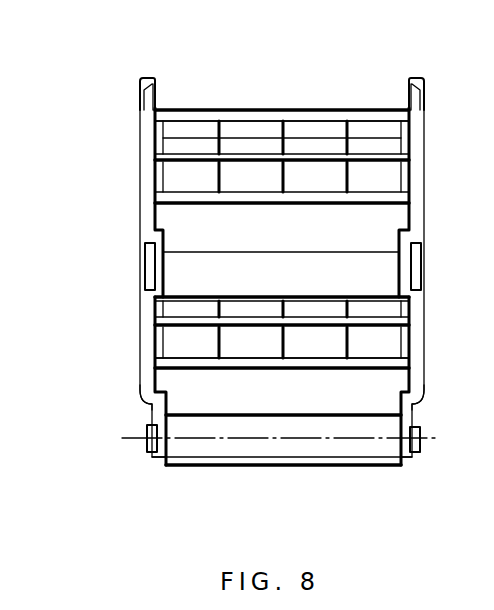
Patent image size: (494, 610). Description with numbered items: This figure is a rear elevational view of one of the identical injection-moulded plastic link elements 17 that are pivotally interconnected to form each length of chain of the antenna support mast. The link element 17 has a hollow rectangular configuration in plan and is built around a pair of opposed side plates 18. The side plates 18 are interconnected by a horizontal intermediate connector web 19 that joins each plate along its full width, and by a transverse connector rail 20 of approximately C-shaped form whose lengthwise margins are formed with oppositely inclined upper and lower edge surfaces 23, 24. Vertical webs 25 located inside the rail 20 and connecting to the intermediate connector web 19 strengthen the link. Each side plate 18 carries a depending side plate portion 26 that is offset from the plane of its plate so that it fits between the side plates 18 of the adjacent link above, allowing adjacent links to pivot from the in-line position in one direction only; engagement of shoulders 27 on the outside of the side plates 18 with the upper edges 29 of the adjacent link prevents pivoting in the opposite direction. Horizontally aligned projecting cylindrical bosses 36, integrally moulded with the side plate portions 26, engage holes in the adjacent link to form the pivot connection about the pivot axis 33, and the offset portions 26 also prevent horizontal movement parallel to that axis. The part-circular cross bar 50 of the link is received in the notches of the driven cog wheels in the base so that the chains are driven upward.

The link element 17 is at (80, 107).
The side plate 18 is at (143, 144).
The intermediate connector web 19 is at (313, 157).
The transverse connector rail 20 is at (198, 108).
The upper edge surface 23 is at (359, 108).
The lower edge surface 24 is at (374, 205).
The vertical web 25 is at (283, 121).
The side plate portion 26 is at (146, 262).
The shoulder 27 is at (147, 405).
The upper edge 29 is at (148, 78).
The pivot axis 33 is at (420, 452).
The cylindrical boss 36 is at (147, 452).
The cross bar 50 is at (275, 282).